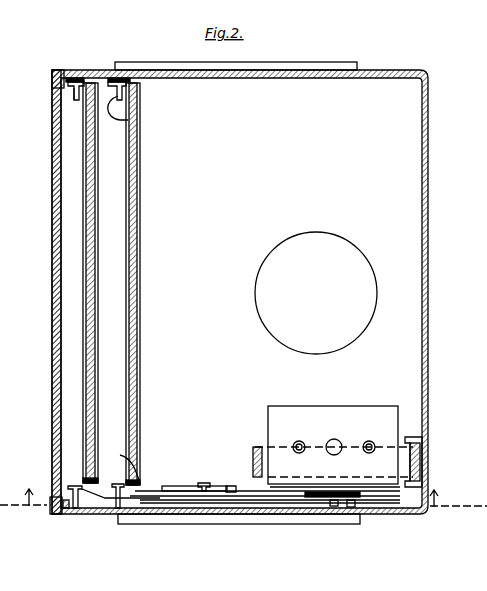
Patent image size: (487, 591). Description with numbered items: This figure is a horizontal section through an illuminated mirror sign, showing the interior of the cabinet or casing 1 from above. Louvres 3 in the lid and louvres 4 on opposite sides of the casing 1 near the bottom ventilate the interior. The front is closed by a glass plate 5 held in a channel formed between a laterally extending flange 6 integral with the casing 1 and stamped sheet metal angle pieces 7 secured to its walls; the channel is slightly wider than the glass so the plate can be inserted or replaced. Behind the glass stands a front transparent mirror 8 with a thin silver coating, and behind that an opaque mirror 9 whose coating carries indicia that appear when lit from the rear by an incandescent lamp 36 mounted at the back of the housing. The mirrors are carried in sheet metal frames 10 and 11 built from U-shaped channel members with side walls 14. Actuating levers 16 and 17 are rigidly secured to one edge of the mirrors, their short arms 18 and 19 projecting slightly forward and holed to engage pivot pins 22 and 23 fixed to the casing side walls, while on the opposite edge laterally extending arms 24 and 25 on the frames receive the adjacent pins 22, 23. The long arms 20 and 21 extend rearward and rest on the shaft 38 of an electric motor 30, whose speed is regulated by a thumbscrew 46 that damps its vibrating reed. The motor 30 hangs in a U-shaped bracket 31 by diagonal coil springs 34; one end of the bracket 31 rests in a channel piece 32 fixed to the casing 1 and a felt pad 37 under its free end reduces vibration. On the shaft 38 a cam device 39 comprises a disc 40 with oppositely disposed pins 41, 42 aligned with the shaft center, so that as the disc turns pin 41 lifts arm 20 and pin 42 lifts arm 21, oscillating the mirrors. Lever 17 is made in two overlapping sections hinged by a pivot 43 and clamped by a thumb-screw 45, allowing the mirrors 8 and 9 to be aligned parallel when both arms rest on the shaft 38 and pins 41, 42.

The casing 1 is at (352, 78).
The louvres 3 is at (243, 494).
The louvres 4 is at (305, 65).
The glass plate 5 is at (52, 370).
The flange 6 is at (52, 80).
The angle pieces 7 is at (68, 512).
The front transparent mirror 8 is at (92, 265).
The opaque mirror 9 is at (138, 200).
The frame 10 is at (98, 340).
The frame 11 is at (141, 392).
The side walls 14 is at (128, 96).
The actuating lever 16 is at (155, 492).
The actuating lever 17 is at (160, 488).
The short arm 18 is at (88, 492).
The short arm 19 is at (118, 486).
The long arm 20 is at (260, 500).
The long arm 21 is at (236, 486).
The pins 22 is at (76, 92).
The pins 23 is at (120, 108).
The arm 24 is at (78, 84).
The arm 25 is at (122, 84).
The electric motor 30 is at (338, 412).
The bracket 31 is at (262, 448).
The channel piece 32 is at (410, 440).
The coil springs 34 is at (299, 441).
The incandescent lamp 36 is at (302, 240).
The felt pad 37 is at (420, 455).
The shaft 38 is at (335, 506).
The cam device 39 is at (400, 500).
The disc 40 is at (350, 506).
The pin 41 is at (372, 496).
The pin 42 is at (300, 496).
The pivot 43 is at (190, 504).
The thumb-screw 45 is at (204, 483).
The thumbscrew 46 is at (332, 439).